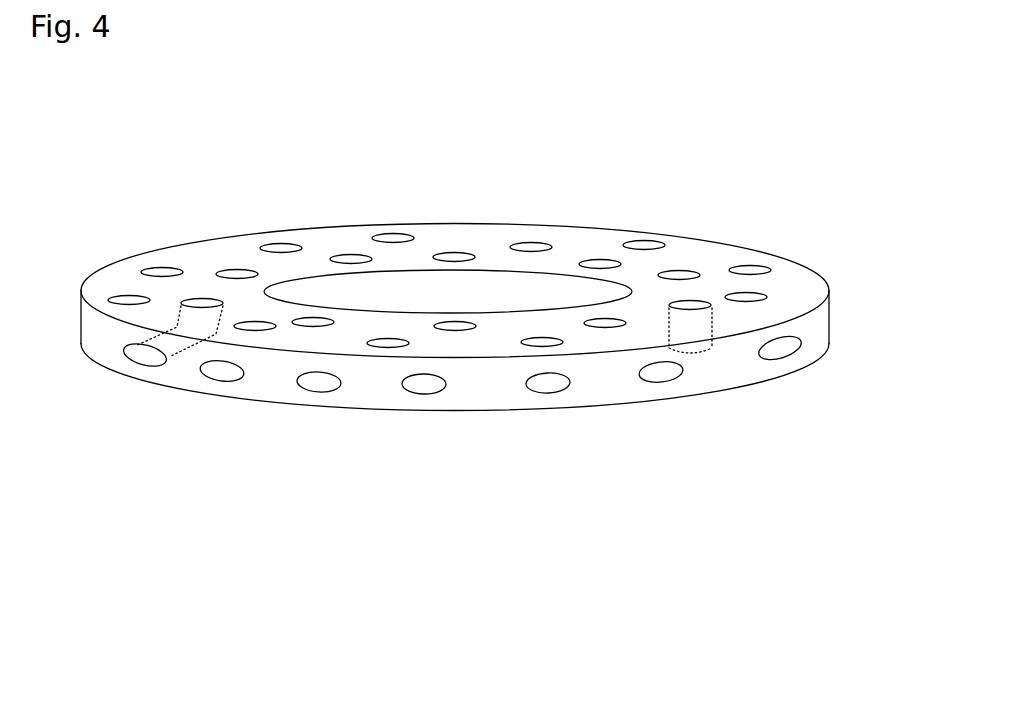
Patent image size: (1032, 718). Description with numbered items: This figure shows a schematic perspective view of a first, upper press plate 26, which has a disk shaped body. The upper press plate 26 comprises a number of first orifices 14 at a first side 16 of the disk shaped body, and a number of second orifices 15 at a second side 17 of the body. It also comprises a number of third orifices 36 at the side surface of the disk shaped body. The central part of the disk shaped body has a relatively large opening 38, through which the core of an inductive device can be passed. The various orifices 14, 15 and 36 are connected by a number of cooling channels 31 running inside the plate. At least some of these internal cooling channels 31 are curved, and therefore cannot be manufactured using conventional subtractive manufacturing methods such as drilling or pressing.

The upper press plate 26 is at (474, 254).
The opening 38 is at (430, 299).
The first orifices 14 is at (647, 240).
The first side 16 is at (713, 262).
The second side 17 is at (768, 382).
The third orifices 36 is at (145, 355).
The cooling channels 31 is at (183, 356).
The second orifices 15 is at (697, 357).